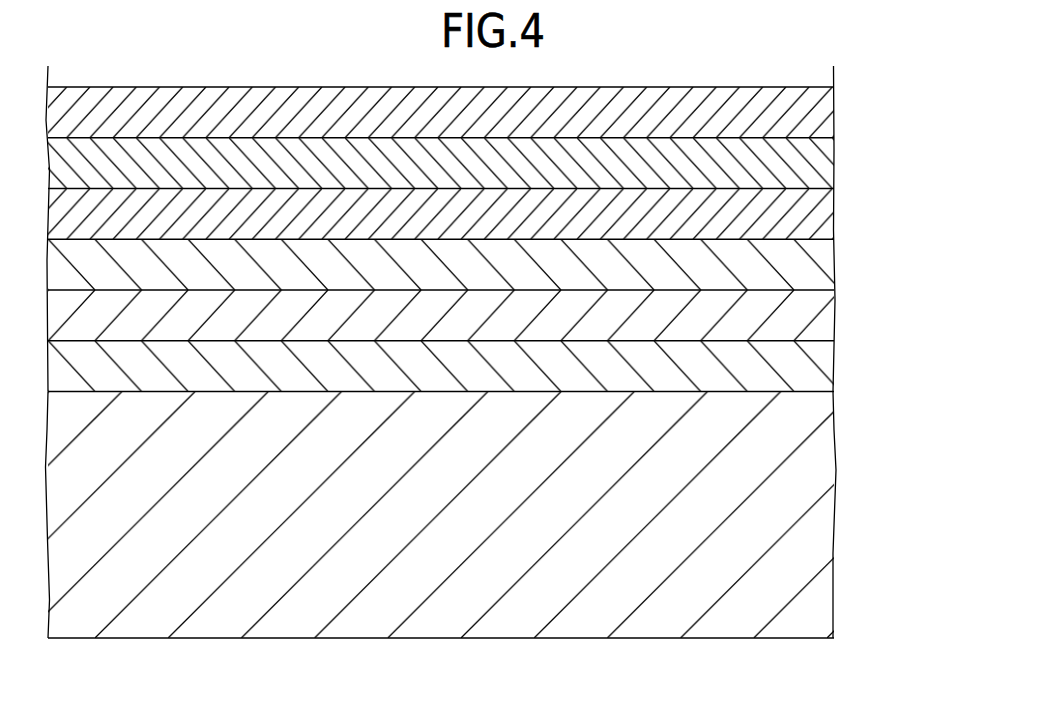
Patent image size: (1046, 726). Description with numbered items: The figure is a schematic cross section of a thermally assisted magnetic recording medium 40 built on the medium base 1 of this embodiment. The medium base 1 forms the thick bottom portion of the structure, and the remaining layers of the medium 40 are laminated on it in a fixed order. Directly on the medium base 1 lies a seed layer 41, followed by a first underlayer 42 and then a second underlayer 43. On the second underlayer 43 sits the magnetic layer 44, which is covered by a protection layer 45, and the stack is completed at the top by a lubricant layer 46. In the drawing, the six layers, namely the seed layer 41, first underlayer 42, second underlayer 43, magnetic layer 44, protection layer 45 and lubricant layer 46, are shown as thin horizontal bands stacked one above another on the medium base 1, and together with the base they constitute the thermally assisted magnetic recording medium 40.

The medium base 1 is at (818, 516).
The thermally assisted magnetic recording medium 40 is at (910, 93).
The seed layer 41 is at (820, 365).
The first underlayer 42 is at (820, 315).
The second underlayer 43 is at (820, 263).
The magnetic layer 44 is at (820, 213).
The protection layer 45 is at (820, 163).
The lubricant layer 46 is at (820, 113).